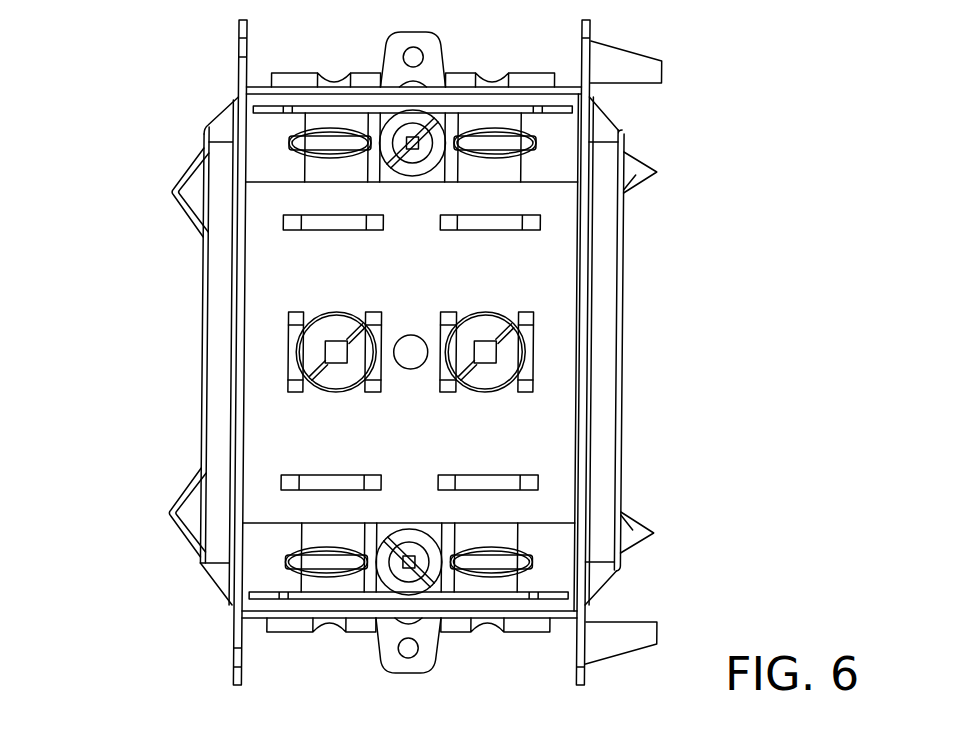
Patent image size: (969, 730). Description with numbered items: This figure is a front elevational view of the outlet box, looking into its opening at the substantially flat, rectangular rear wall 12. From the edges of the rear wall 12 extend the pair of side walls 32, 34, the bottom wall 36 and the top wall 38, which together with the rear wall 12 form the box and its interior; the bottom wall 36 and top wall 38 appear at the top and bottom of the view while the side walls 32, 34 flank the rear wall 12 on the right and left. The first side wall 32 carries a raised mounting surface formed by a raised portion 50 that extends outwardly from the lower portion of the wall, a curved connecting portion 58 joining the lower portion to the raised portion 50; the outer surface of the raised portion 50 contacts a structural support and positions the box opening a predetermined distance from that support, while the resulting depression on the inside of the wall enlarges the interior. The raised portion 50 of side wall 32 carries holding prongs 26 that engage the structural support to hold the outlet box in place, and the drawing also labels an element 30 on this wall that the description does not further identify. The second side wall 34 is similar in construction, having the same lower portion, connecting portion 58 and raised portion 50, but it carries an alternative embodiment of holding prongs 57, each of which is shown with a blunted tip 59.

The rear wall 12 is at (556, 338).
The prong 26 is at (634, 176).
The mounting wing 30 is at (622, 84).
The side wall 32 is at (620, 415).
The second side wall 34 is at (204, 262).
The bottom wall 36 is at (483, 72).
The top wall 38 is at (493, 633).
The raised portion 50 is at (620, 476).
The holding prongs 57 is at (192, 162).
The connecting portion 58 is at (602, 290).
The blunted tip 59 is at (172, 193).